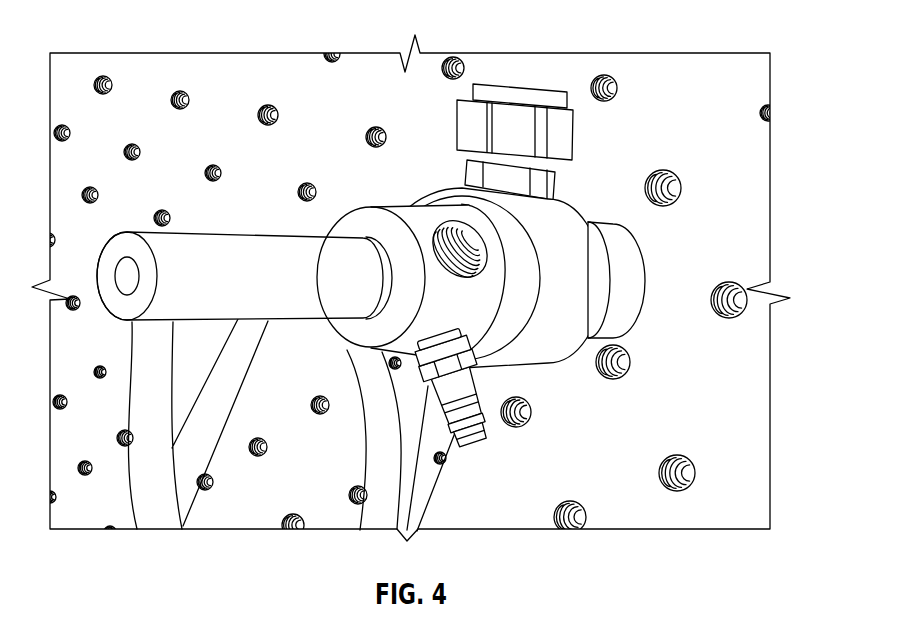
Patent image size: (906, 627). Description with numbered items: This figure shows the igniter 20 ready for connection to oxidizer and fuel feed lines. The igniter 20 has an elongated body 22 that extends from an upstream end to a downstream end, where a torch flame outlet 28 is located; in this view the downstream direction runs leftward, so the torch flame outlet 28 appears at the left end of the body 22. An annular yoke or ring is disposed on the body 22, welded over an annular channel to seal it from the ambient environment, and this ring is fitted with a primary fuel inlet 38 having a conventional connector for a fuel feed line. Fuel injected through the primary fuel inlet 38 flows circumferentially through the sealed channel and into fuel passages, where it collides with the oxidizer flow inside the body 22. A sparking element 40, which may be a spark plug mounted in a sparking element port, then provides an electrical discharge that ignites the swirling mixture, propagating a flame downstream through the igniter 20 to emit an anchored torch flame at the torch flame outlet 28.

The igniter 20 is at (668, 40).
The elongated body 22 is at (242, 314).
The torch flame outlet 28 is at (118, 277).
The primary fuel inlet 38 is at (512, 79).
The sparking element 40 is at (492, 428).